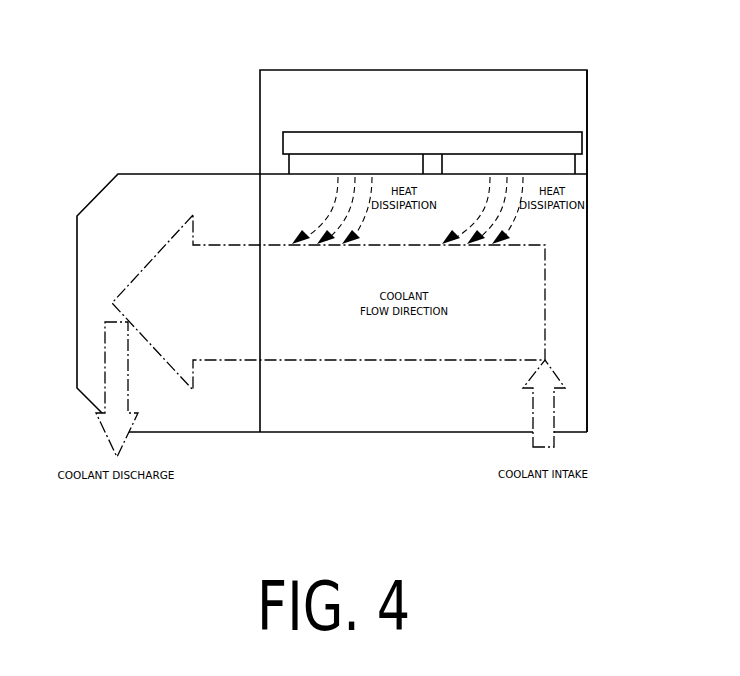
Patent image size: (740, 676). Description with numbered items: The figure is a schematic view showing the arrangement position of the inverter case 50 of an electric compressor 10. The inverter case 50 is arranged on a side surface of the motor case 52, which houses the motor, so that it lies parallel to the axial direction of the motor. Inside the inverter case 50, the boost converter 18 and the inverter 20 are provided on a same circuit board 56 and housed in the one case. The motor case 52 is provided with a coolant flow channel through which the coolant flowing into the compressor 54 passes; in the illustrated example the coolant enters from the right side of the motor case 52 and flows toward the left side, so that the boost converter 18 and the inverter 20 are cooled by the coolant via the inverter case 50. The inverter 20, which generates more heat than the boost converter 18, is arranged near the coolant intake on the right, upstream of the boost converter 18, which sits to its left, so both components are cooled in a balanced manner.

The electric compressor 10 is at (375, 455).
The boost converter 18 is at (350, 165).
The inverter 20 is at (512, 165).
The inverter case 50 is at (421, 70).
The motor case 52 is at (588, 310).
The compressor 54 is at (173, 174).
The circuit board 56 is at (478, 131).